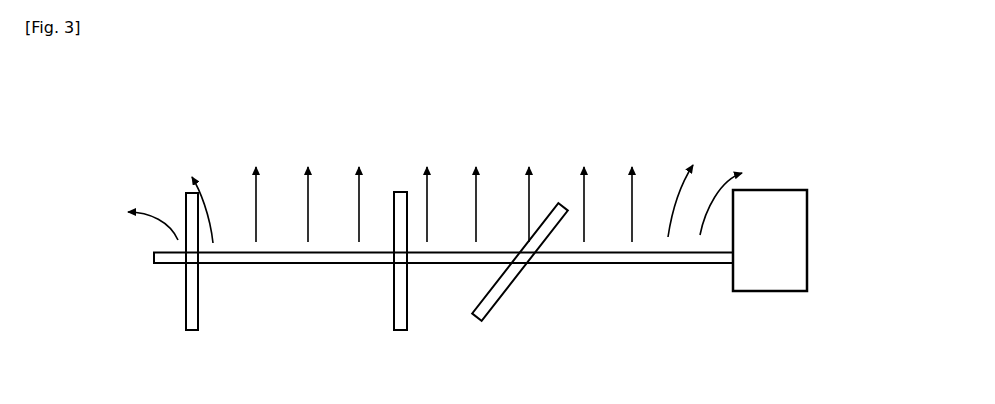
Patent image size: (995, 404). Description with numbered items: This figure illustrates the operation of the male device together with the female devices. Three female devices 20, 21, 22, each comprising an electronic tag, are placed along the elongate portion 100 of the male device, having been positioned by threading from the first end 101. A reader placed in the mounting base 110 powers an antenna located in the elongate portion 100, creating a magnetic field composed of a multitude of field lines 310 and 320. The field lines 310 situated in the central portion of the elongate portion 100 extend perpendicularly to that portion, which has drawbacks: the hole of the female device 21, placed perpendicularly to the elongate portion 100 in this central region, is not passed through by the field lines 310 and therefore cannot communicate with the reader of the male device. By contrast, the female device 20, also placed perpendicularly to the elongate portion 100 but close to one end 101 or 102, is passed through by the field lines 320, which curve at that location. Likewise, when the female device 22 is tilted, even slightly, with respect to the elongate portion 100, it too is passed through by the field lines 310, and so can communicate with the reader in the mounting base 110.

The elongate portion 100 is at (245, 265).
The first end 101 is at (150, 257).
The end 102 is at (727, 267).
The female device 20 is at (186, 293).
The female device 21 is at (394, 293).
The female device 22 is at (520, 273).
The mounting base 110 is at (807, 229).
The field lines 310 is at (256, 193).
The field lines 320 is at (156, 217).